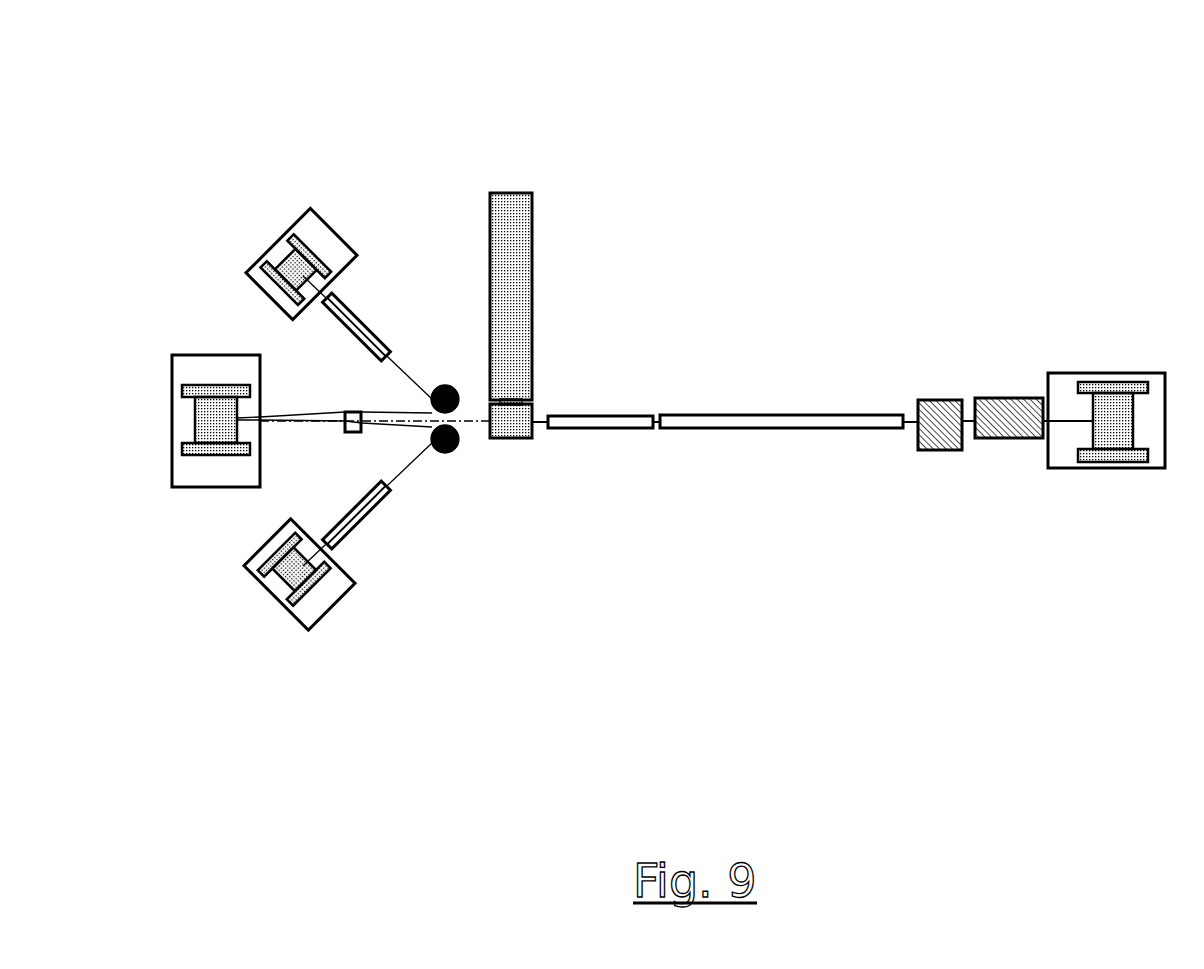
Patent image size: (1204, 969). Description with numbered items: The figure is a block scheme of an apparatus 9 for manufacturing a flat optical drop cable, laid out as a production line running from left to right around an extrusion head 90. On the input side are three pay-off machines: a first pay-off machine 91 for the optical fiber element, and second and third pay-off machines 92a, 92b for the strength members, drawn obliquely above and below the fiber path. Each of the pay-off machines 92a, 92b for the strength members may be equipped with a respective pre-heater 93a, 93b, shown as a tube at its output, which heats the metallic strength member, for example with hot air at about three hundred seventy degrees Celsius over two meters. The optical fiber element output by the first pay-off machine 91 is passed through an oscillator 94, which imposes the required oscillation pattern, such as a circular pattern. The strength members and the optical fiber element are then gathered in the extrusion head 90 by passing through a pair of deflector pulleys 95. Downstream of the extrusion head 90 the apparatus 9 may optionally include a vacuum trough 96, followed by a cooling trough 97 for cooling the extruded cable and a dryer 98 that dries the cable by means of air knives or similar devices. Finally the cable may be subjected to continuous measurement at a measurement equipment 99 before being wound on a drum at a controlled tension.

The apparatus 9 is at (370, 170).
The extrusion head 90 is at (520, 462).
The first pay-off machine 91 is at (215, 355).
The second pay-off machine 92a is at (280, 240).
The third pay-off machine 92b is at (277, 599).
The pre-heater 93a is at (377, 322).
The pre-heater 93b is at (385, 518).
The oscillator 94 is at (353, 435).
The deflector pulleys 95 is at (458, 462).
The vacuum trough 96 is at (603, 403).
The cooling trough 97 is at (788, 402).
The dryer 98 is at (938, 383).
The measurement equipment 99 is at (1010, 385).